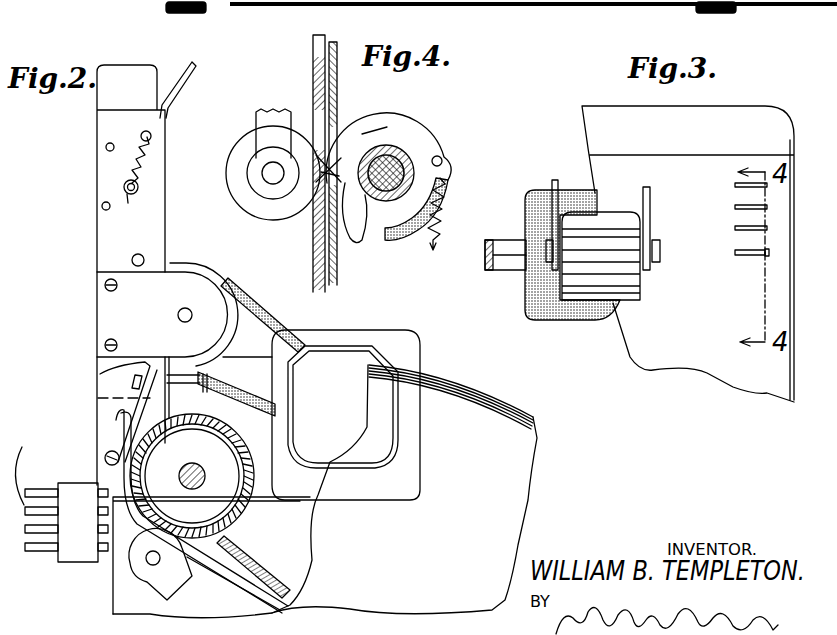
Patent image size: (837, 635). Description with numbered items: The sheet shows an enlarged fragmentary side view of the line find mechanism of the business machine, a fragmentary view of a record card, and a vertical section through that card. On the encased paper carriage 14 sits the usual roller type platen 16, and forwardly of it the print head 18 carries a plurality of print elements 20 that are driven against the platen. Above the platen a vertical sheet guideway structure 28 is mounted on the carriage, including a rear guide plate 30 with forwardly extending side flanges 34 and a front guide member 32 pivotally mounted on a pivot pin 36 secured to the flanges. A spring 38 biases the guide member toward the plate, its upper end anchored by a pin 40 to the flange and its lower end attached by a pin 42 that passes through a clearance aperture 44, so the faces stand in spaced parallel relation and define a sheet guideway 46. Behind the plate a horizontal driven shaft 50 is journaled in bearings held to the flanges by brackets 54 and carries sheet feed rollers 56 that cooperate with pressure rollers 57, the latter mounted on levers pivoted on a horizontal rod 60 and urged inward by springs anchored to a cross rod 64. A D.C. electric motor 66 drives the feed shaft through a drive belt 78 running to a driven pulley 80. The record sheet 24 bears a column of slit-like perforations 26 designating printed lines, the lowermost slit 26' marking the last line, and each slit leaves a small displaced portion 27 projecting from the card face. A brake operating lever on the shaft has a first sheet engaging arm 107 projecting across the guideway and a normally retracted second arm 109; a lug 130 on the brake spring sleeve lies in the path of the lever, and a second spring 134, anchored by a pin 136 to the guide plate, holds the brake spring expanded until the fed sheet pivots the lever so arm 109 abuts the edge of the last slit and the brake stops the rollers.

In FIG. 2, the paper carriage 14 is at (420, 525).
In FIG. 2, the platen 16 is at (226, 520).
In FIG. 2, the print head 18 is at (72, 488).
In FIG. 2, the print elements 20 is at (26, 462).
In FIG. 2, the record sheet 24 is at (98, 398).
In FIG. 4, the record sheet 24 is at (316, 38).
In FIG. 3, the record sheet 24 is at (708, 374).
In FIG. 4, the perforations 26 is at (300, 130).
In FIG. 3, the perforations 26 is at (720, 206).
In FIG. 4, the lowermost slit 26' is at (273, 164).
In FIG. 3, the lowermost slit 26' is at (723, 249).
In FIG. 4, the displaced card portion 27 is at (343, 117).
In FIG. 2, the sheet guideway structure 28 is at (170, 102).
In FIG. 4, the rear guide plate 30 is at (340, 282).
In FIG. 4, the guide member 32 is at (312, 62).
In FIG. 2, the side flanges 34 is at (158, 205).
In FIG. 2, the pivot pins 36 is at (106, 148).
In FIG. 2, the springs 38 is at (150, 155).
In FIG. 2, the pins 40 is at (152, 136).
In FIG. 2, the pins 42 is at (140, 188).
In FIG. 2, the clearance apertures 44 is at (128, 203).
In FIG. 4, the sheet guideway 46 is at (326, 274).
In FIG. 2, the driven shaft 50 is at (182, 322).
In FIG. 4, the driven shaft 50 is at (392, 158).
In FIG. 3, the driven shaft 50 is at (510, 272).
In FIG. 2, the brackets 54 is at (103, 318).
In FIG. 4, the sheet feed rollers 56 is at (403, 240).
In FIG. 3, the sheet feed rollers 56 is at (576, 322).
In FIG. 4, the pressure rollers 57 is at (248, 206).
In FIG. 3, the pressure rollers 57 is at (630, 303).
In FIG. 2, the horizontal rod 60 is at (132, 260).
In FIG. 2, the cross rod 64 is at (102, 206).
In FIG. 2, the electric motor 66 is at (408, 335).
In FIG. 2, the drive belt 78 is at (246, 300).
In FIG. 2, the driven pulley 80 is at (190, 262).
In FIG. 4, the first sheet engaging arm 107 is at (353, 243).
In FIG. 4, the second sheet engaging arm 109 is at (318, 212).
In FIG. 3, the second sheet engaging arm 109 is at (750, 256).
In FIG. 4, the lug 130 is at (383, 132).
In FIG. 4, the second spring 134 is at (445, 231).
In FIG. 2, the pin 136 is at (190, 384).